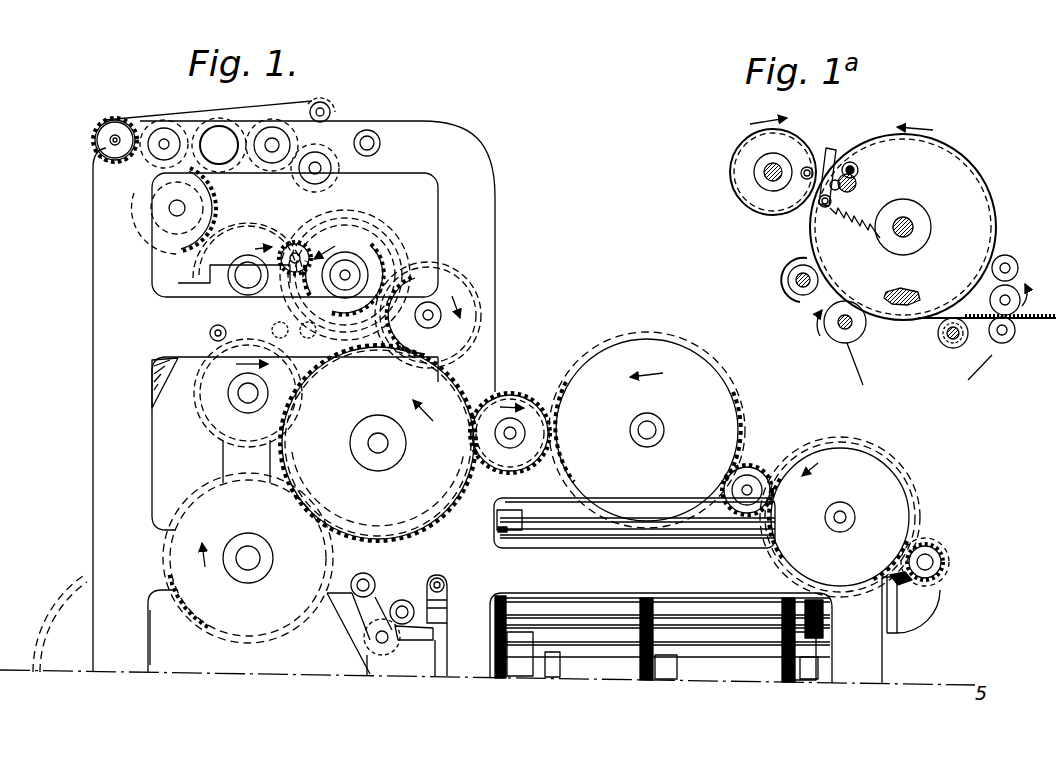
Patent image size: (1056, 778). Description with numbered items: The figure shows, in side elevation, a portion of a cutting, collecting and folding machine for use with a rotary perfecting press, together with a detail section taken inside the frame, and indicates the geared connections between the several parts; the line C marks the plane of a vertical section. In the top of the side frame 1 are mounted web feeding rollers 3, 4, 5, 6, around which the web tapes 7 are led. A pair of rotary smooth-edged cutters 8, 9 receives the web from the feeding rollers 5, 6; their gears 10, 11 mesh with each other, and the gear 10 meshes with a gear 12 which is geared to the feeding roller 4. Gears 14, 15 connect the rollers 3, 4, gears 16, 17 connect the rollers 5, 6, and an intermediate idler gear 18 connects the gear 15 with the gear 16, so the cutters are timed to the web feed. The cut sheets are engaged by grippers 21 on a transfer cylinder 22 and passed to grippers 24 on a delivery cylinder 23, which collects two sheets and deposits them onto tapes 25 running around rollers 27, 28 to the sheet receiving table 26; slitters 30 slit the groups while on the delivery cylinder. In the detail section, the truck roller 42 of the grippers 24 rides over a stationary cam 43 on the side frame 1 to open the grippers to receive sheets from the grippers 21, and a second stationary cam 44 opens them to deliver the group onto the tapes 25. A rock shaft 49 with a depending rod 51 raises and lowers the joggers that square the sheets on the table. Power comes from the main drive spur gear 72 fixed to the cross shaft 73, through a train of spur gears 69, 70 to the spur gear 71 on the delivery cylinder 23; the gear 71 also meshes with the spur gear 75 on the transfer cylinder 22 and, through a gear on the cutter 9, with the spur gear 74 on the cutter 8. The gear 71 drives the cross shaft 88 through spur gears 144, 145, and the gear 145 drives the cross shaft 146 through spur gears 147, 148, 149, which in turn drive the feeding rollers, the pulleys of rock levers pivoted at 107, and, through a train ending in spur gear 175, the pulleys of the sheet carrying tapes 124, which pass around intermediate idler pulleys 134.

In FIG. 1, the side frame 1 is at (377, 213).
In FIG. 1, the web feeding roller 3 is at (113, 142).
In FIG. 1, the web feeding roller 4 is at (164, 143).
In FIG. 1, the web feeding roller 5 is at (274, 140).
In FIG. 1, the web feeding roller 6 is at (316, 167).
In FIG. 1, the web tapes 7 is at (204, 126).
In FIG. 1, the rotary cutter 8 is at (250, 271).
In FIG. 1, the rotary cutter 9 is at (345, 275).
In FIG. 1, the gear 10 is at (256, 228).
In FIG. 1, the gear 11 is at (297, 242).
In FIG. 1, the gear 12 is at (214, 222).
In FIG. 1, the gear 14 is at (96, 140).
In FIG. 1, the gear 15 is at (150, 127).
In FIG. 1, the gear 16 is at (270, 120).
In FIG. 1, the gear 17 is at (330, 176).
In FIG. 1, the intermediate idler gear 18 is at (224, 124).
In FIG. 1A, the grippers 21 is at (822, 153).
In FIG. 1, the transfer cylinder 22 is at (247, 394).
In FIG. 1A, the transfer cylinder 22 is at (730, 152).
In FIG. 1, the delivery cylinder 23 is at (380, 445).
In FIG. 1A, the delivery cylinder 23 is at (903, 223).
In FIG. 1A, the grippers 24 is at (836, 160).
In FIG. 1, the tapes 25 is at (354, 606).
In FIG. 1A, the tapes 25 is at (980, 348).
In FIG. 1, the sheet receiving table 26 is at (683, 543).
In FIG. 1A, the sheet receiving table 26 is at (1016, 304).
In FIG. 1A, the roller 27 is at (835, 343).
In FIG. 1, the roller 28 is at (380, 655).
In FIG. 1A, the slitters 30 is at (797, 296).
In FIG. 1A, the truck roller 42 is at (858, 169).
In FIG. 1A, the stationary cam 43 is at (857, 183).
In FIG. 1A, the stationary cam 44 is at (905, 290).
In FIG. 1, the rock shaft 49 is at (402, 606).
In FIG. 1, the depending rod 51 is at (367, 657).
In FIG. 1, the spur gear 69 is at (164, 637).
In FIG. 1, the spur gear 70 is at (248, 558).
In FIG. 1, the spur gear 71 is at (378, 443).
In FIG. 1, the main drive spur gear 72 is at (428, 315).
In FIG. 1, the cross shaft 73 is at (378, 270).
In FIG. 1, the spur gear 74 is at (292, 240).
In FIG. 1, the spur gear 75 is at (248, 427).
In FIG. 1, the cross shaft 88 is at (650, 432).
In FIG. 1, the pivot 107 is at (573, 527).
In FIG. 1, the sheet carrying tapes 124 is at (641, 682).
In FIG. 1, the intermediate idler pulleys 134 is at (656, 680).
In FIG. 1, the spur gear 144 is at (518, 394).
In FIG. 1, the spur gear 145 is at (647, 430).
In FIG. 1, the cross shaft 146 is at (934, 566).
In FIG. 1, the spur gear 147 is at (745, 467).
In FIG. 1, the spur gear 148 is at (840, 517).
In FIG. 1, the spur gear 149 is at (930, 546).
In FIG. 1, the spur gear 175 is at (826, 622).
In FIG. 1, the section line C— C is at (655, 686).
In FIG. 1A, the section line C— C is at (655, 235).